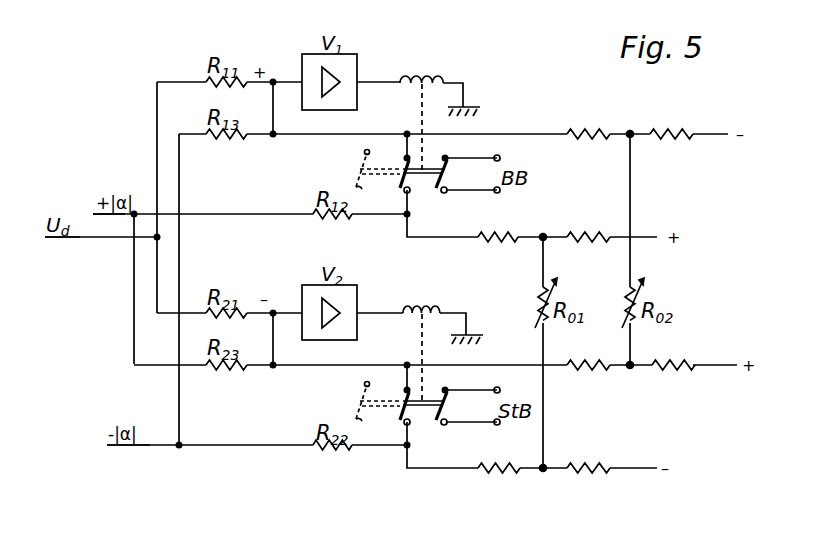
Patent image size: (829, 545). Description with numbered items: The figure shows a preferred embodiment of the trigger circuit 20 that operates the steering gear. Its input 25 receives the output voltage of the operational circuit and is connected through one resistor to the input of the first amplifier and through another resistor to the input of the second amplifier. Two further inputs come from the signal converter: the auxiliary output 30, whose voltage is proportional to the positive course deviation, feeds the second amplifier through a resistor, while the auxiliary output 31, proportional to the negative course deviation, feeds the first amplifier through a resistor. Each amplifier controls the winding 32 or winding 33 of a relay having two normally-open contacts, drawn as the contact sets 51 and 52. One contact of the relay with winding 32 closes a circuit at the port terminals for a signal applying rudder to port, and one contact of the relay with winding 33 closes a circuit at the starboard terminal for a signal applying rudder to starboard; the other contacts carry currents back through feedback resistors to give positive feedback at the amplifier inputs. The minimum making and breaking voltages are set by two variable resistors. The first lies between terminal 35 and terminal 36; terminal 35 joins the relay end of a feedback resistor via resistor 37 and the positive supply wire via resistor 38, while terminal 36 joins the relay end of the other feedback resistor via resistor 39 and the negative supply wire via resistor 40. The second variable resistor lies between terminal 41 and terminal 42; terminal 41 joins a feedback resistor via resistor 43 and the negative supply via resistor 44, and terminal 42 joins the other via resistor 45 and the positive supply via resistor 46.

The trigger circuit 20 is at (449, 80).
The input 25 is at (80, 240).
The auxiliary output 30 is at (118, 217).
The auxiliary output 31 is at (122, 448).
The winding 32 is at (422, 76).
The winding 33 is at (422, 306).
The terminal 35 is at (543, 233).
The terminal 36 is at (544, 471).
The resistor 37 is at (495, 241).
The resistor 38 is at (590, 241).
The resistor 39 is at (501, 471).
The resistor 40 is at (600, 471).
The terminal 41 is at (631, 131).
The terminal 42 is at (630, 368).
The resistor 43 is at (584, 132).
The resistor 44 is at (683, 132).
The resistor 45 is at (567, 369).
The resistor 46 is at (673, 368).
The relay changeover contact 51 is at (428, 182).
The relay changeover contact 52 is at (428, 413).